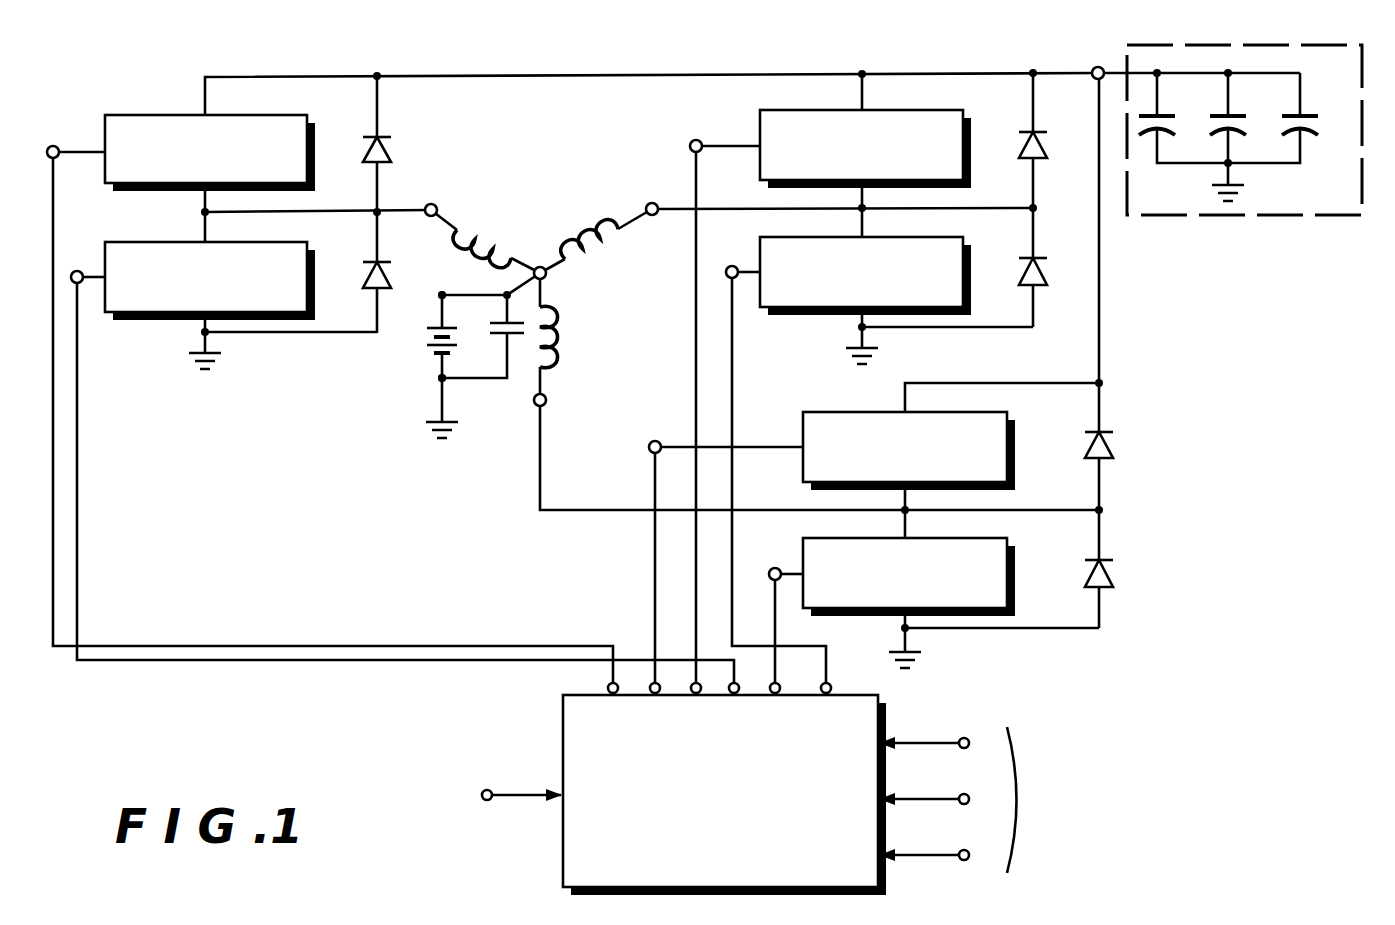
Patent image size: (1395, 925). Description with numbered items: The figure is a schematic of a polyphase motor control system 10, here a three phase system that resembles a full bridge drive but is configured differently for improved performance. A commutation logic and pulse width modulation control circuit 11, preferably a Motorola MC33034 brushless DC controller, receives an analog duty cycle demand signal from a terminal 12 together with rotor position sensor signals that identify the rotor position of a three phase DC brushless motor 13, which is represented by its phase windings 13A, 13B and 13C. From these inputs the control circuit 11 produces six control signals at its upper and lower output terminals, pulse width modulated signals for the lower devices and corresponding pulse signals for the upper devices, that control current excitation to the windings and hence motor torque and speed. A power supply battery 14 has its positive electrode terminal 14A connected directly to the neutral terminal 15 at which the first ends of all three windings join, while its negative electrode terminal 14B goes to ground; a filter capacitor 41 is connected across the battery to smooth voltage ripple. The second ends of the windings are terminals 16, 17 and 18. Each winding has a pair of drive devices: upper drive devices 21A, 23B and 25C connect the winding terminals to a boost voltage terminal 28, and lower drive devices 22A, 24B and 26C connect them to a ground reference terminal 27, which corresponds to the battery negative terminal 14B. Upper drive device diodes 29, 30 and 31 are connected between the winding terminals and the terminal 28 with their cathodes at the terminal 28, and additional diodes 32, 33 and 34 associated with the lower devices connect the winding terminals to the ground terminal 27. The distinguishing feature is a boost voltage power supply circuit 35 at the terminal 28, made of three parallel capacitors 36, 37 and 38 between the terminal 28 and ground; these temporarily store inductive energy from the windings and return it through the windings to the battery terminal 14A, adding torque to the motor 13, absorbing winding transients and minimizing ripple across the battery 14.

The polyphase motor control system 10 is at (318, 753).
The commutation logic and pulse width modulation control circuit 11 is at (563, 723).
The terminal 12 is at (484, 790).
The three phase DC brushless motor 13 is at (541, 265).
The motor phase winding 13A is at (487, 243).
The motor phase winding 13B is at (560, 320).
The motor phase winding 13C is at (598, 223).
The power supply battery 14 is at (440, 330).
The positive electrode terminal 14A is at (442, 295).
The negative electrode terminal 14B is at (442, 378).
The neutral terminal 15 is at (546, 276).
The terminal 16 is at (436, 205).
The terminal 17 is at (546, 398).
The terminal 18 is at (650, 203).
The upper drive device 21A is at (307, 115).
The lower drive device 22A is at (307, 242).
The upper drive device 23B is at (1007, 412).
The lower drive device 24B is at (1007, 538).
The upper drive device 25C is at (963, 110).
The lower drive device 26C is at (963, 237).
The ground reference terminal 27 is at (205, 332).
The boost voltage terminal 28 is at (1096, 68).
The upper drive device diode 29 is at (385, 137).
The upper drive device diode 30 is at (1107, 432).
The upper drive device diode 31 is at (1041, 132).
The additional diode 32 is at (385, 262).
The additional diode 33 is at (1107, 560).
The additional diode 34 is at (1041, 258).
The boost voltage power supply circuit 35 is at (1244, 164).
The capacitor 36 is at (1160, 114).
The capacitor 37 is at (1231, 114).
The capacitor 38 is at (1303, 114).
The filter capacitor 41 is at (507, 337).